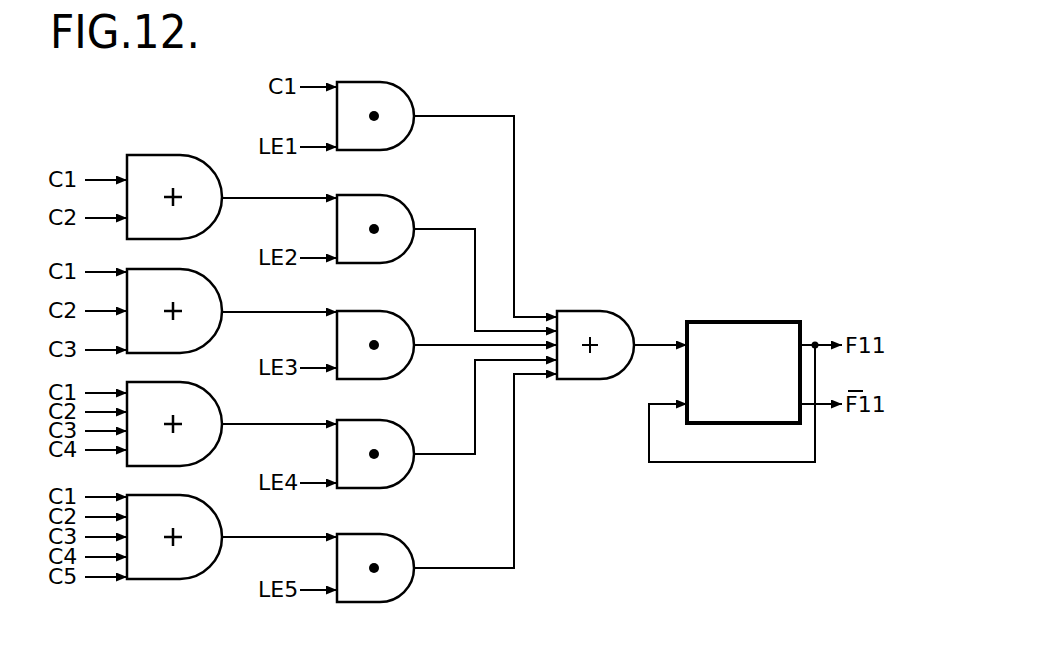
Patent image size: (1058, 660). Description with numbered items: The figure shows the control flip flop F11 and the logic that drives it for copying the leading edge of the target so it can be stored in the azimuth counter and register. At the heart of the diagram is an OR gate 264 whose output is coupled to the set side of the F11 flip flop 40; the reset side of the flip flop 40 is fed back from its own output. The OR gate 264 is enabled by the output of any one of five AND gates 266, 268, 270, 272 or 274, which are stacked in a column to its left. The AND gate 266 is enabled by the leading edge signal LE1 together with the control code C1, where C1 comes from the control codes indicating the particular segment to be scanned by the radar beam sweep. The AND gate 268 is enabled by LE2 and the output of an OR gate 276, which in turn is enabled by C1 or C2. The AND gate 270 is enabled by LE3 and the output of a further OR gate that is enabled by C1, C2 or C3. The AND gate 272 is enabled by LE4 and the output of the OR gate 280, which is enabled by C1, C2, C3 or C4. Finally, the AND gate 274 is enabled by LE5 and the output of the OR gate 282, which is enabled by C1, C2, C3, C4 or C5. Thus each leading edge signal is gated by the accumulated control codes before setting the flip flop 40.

The OR gate 276 is at (204, 157).
The AND gate 268 is at (210, 276).
The OR gate 280 is at (212, 392).
The OR gate 282 is at (199, 497).
The AND gate 266 is at (398, 148).
The AND gate 270 is at (398, 378).
The AND gate 272 is at (398, 489).
The AND gate 274 is at (398, 603).
The OR gate 264 is at (617, 312).
The F11 flip flop 40 is at (688, 321).